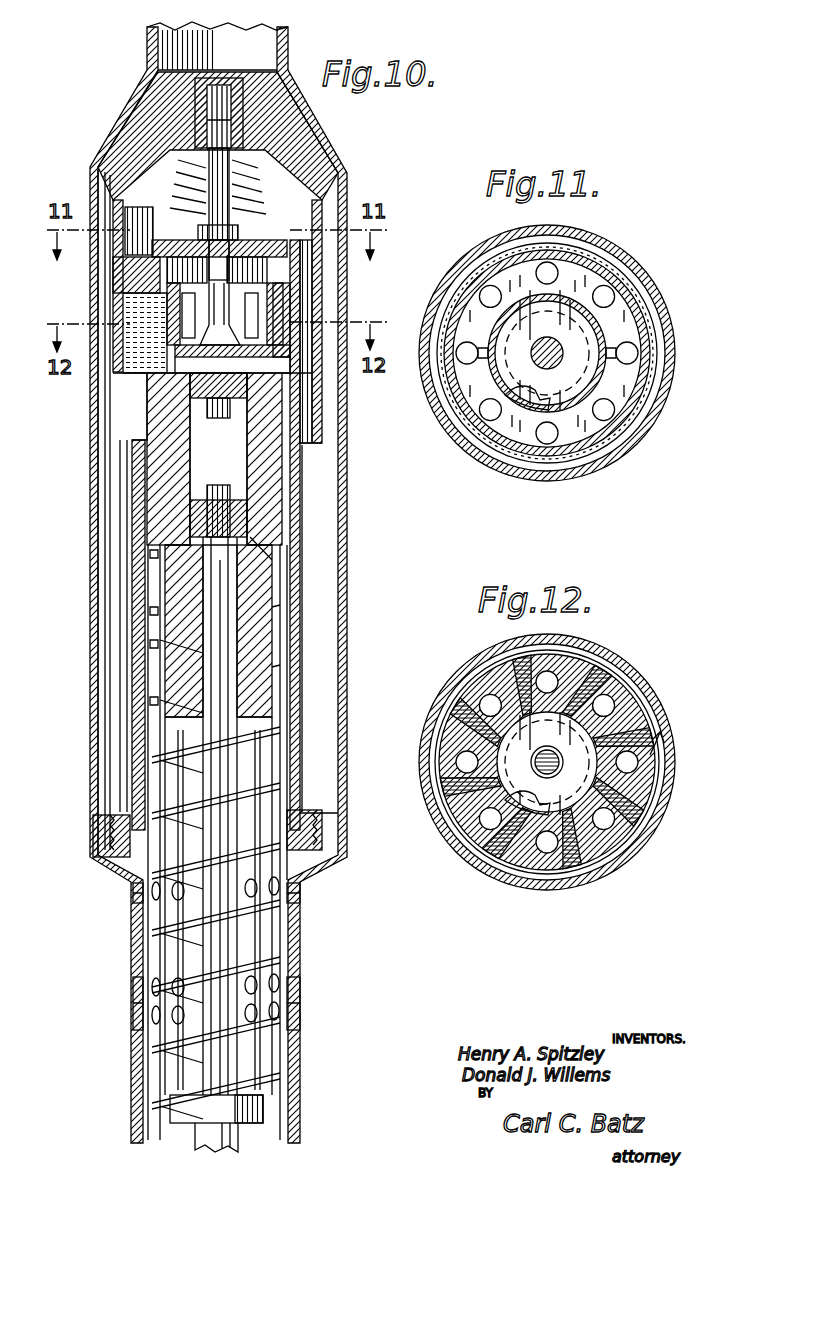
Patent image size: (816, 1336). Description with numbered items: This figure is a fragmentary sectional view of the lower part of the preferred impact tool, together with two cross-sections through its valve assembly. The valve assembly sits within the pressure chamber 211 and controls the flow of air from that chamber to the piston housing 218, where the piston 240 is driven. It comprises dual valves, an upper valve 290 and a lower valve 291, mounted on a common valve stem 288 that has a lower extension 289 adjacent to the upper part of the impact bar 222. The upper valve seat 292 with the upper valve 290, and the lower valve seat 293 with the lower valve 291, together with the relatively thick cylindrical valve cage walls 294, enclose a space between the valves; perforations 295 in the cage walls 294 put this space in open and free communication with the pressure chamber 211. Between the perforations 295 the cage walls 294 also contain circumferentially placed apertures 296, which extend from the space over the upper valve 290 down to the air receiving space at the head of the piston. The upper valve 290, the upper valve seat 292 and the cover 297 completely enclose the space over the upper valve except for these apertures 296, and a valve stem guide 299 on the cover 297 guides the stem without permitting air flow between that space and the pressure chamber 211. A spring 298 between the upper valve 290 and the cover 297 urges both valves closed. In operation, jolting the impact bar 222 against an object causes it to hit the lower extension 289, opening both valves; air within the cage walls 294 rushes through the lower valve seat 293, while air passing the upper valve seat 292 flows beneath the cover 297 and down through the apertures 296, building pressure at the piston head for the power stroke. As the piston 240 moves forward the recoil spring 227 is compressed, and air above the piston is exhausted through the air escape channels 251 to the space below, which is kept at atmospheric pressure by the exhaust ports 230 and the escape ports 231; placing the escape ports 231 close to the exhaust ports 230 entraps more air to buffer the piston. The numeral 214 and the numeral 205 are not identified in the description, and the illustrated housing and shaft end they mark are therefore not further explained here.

In FIG. 10, the shaft end 205 is at (262, 1125).
In FIG. 10, the pressure chamber 211 is at (217, 50).
In FIG. 12, the pressure chamber 211 is at (677, 762).
In FIG. 10, the outer housing 214 is at (348, 180).
In FIG. 11, the outer housing 214 is at (483, 262).
In FIG. 12, the outer housing 214 is at (470, 670).
In FIG. 10, the piston housing 218 is at (300, 1090).
In FIG. 10, the impact bar 222 is at (222, 583).
In FIG. 10, the recoil spring 227 is at (280, 845).
In FIG. 10, the exhaust ports 230 is at (302, 893).
In FIG. 10, the escape ports 231 is at (302, 1010).
In FIG. 10, the piston 240 is at (163, 665).
In FIG. 10, the air escape channels 251 is at (280, 532).
In FIG. 10, the valve stem 288 is at (230, 132).
In FIG. 11, the valve stem 288 is at (548, 343).
In FIG. 12, the valve stem 288 is at (540, 768).
In FIG. 10, the lower extension 289 is at (272, 476).
In FIG. 10, the upper valve 290 is at (206, 231).
In FIG. 11, the upper valve 290 is at (590, 372).
In FIG. 10, the lower valve 291 is at (175, 360).
In FIG. 12, the lower valve 291 is at (585, 840).
In FIG. 10, the upper valve seat 292 is at (318, 292).
In FIG. 11, the upper valve seat 292 is at (525, 455).
In FIG. 10, the lower valve seat 293 is at (280, 363).
In FIG. 12, the lower valve seat 293 is at (500, 855).
In FIG. 10, the valve cage walls 294 is at (307, 303).
In FIG. 11, the valve cage walls 294 is at (580, 275).
In FIG. 12, the valve cage walls 294 is at (455, 752).
In FIG. 10, the perforations 295 is at (150, 315).
In FIG. 12, the perforations 295 is at (590, 690).
In FIG. 10, the apertures 296 is at (297, 240).
In FIG. 11, the apertures 296 is at (637, 357).
In FIG. 12, the apertures 296 is at (606, 706).
In FIG. 10, the cover 297 is at (283, 157).
In FIG. 11, the cover 297 is at (652, 323).
In FIG. 10, the spring 298 is at (252, 186).
In FIG. 10, the valve stem guide 299 is at (244, 103).